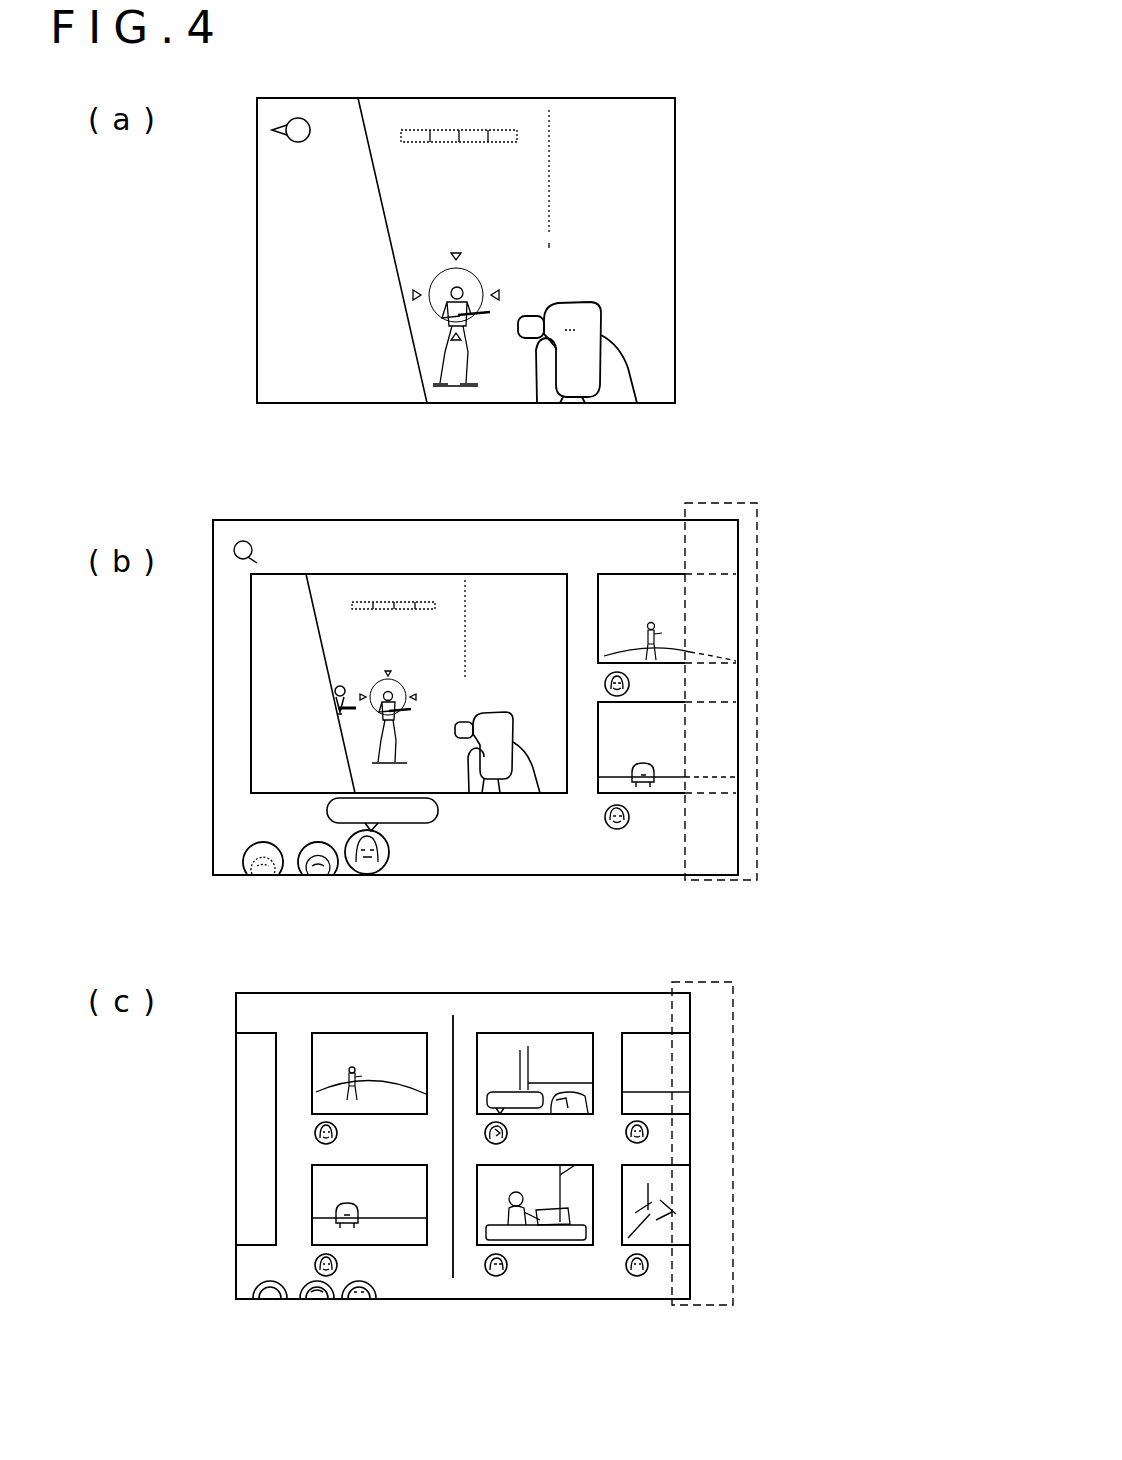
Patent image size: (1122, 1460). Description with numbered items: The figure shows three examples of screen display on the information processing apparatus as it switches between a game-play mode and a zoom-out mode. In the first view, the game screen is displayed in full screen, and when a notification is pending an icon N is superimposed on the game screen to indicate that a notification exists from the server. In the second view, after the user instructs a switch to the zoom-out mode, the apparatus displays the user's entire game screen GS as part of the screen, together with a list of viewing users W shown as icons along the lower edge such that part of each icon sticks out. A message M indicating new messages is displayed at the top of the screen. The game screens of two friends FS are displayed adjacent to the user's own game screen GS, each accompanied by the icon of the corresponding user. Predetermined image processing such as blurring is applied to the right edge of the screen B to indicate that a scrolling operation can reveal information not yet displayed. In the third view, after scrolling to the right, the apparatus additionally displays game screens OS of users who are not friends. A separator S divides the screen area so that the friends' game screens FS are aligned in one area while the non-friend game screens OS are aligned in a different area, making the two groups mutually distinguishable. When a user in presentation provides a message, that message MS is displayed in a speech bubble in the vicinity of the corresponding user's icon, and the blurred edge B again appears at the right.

The icon N is at (312, 117).
The game screen GS is at (658, 280).
The message M is at (369, 534).
The game screens of friends FS is at (634, 572).
The list of viewing users W is at (407, 851).
The edge of the screen B is at (757, 800).
The message MS is at (500, 1090).
The game screens of other users OS is at (557, 1031).
The separator S is at (454, 1286).